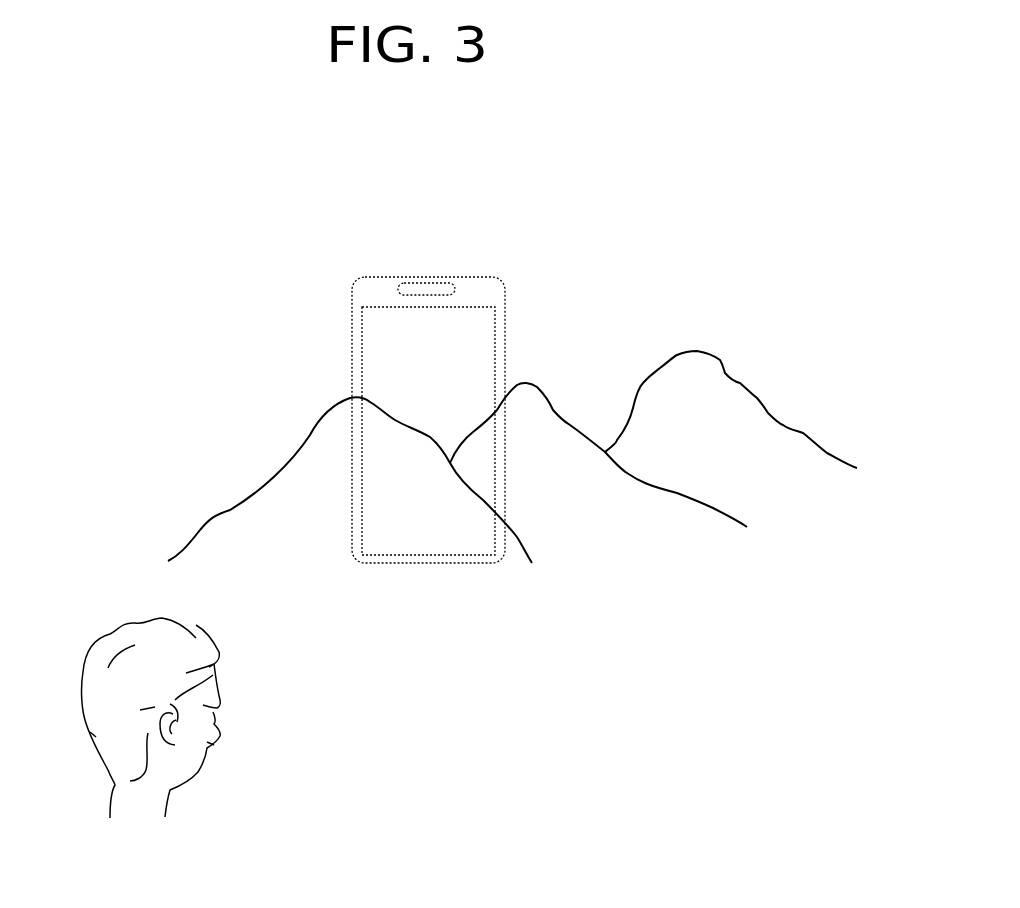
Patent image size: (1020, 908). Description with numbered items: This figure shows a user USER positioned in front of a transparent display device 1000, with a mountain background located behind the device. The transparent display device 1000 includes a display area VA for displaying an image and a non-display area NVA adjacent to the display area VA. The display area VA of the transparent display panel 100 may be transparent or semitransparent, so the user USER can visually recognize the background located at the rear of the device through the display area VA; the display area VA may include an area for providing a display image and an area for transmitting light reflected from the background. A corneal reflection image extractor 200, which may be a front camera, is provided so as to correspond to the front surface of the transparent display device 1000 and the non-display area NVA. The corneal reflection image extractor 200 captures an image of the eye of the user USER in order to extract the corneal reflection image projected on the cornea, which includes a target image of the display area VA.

The transparent display device 1000 is at (546, 211).
The transparent display panel 100 is at (481, 302).
The corneal reflection image extractor 200 is at (417, 281).
The non-display area NVA is at (358, 290).
The display area VA is at (360, 357).
The user USER is at (131, 608).